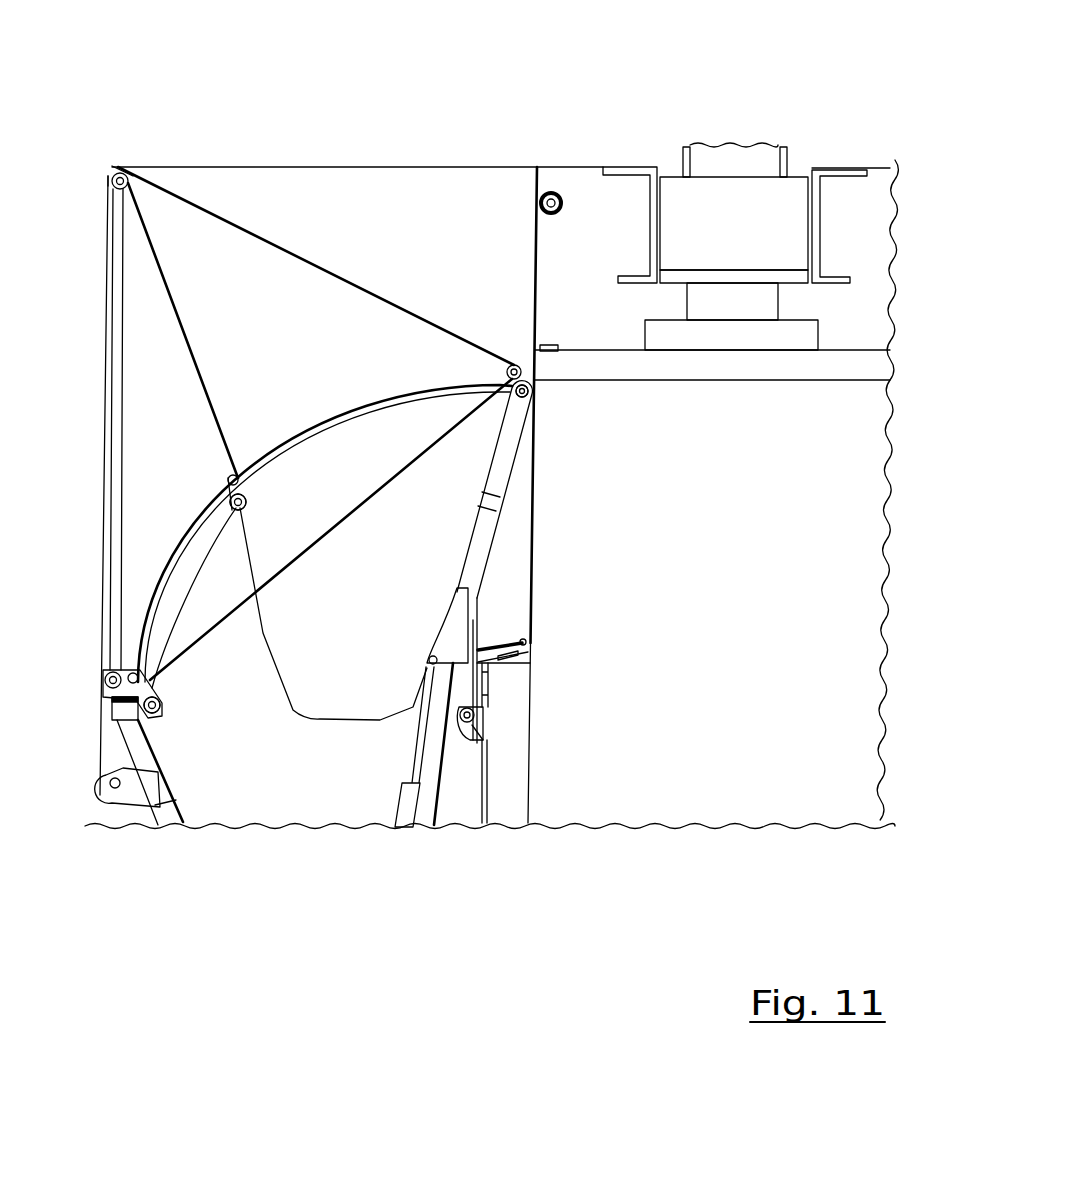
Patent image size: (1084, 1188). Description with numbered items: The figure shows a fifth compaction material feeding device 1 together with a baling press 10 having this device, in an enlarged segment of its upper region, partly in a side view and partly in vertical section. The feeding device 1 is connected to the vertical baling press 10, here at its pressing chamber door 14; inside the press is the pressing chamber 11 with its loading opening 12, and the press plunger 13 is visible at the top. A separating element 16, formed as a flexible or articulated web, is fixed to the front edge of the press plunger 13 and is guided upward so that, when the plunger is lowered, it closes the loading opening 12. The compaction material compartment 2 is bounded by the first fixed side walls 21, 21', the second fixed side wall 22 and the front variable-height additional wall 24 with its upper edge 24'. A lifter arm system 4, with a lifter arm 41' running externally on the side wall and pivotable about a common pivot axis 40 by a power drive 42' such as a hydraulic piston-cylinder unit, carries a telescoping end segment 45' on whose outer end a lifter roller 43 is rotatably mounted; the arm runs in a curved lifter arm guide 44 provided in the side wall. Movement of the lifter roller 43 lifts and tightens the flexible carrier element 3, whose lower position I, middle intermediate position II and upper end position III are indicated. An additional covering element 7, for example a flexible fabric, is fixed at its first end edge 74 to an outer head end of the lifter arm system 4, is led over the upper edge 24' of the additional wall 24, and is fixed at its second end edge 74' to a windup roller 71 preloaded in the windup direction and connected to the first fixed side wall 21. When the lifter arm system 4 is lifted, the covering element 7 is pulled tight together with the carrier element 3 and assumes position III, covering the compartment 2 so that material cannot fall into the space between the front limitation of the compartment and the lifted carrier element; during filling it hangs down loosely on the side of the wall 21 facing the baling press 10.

The compaction material feeding device 1 is at (244, 138).
The compaction material compartment 2 is at (333, 614).
The carrier element 3 is at (511, 574).
The lifter arm system 4 is at (420, 614).
The covering element 7 is at (308, 244).
The baling press 10 is at (868, 113).
The pressing chamber 11 is at (745, 672).
The loading opening 12 is at (535, 527).
The press plunger 13 is at (795, 372).
The pressing chamber door 14 is at (503, 795).
The separating element 16 is at (538, 272).
The first fixed side wall 21 is at (182, 747).
The first fixed side wall 21' is at (423, 784).
The second fixed side wall 22 is at (436, 250).
The variable-height additional wall 24 is at (150, 485).
The upper edge 24' is at (131, 133).
The pivot axis 40 is at (470, 730).
The lifter arm 41' is at (540, 662).
The power drive 42' is at (373, 781).
The lifter roller 43 is at (533, 381).
The lifter arm guide 44 is at (345, 420).
The telescoping end segment 45' is at (542, 489).
The windup roller 71 is at (108, 795).
The first end edge 74 is at (506, 322).
The second end edge 74' is at (195, 645).
The lower position I is at (160, 713).
The middle intermediate position II is at (203, 390).
The upper end position III is at (500, 352).